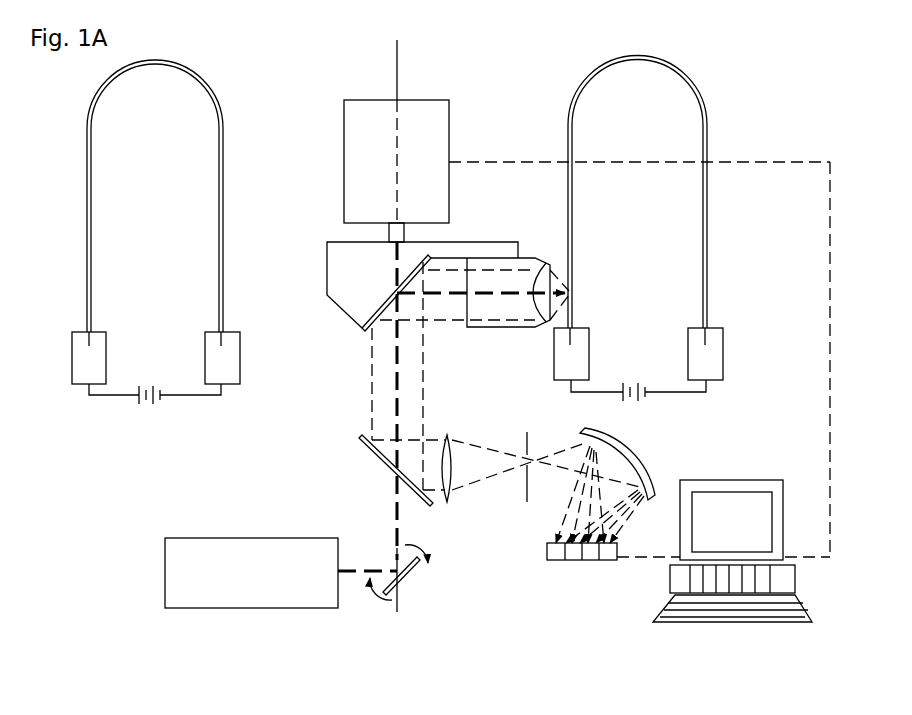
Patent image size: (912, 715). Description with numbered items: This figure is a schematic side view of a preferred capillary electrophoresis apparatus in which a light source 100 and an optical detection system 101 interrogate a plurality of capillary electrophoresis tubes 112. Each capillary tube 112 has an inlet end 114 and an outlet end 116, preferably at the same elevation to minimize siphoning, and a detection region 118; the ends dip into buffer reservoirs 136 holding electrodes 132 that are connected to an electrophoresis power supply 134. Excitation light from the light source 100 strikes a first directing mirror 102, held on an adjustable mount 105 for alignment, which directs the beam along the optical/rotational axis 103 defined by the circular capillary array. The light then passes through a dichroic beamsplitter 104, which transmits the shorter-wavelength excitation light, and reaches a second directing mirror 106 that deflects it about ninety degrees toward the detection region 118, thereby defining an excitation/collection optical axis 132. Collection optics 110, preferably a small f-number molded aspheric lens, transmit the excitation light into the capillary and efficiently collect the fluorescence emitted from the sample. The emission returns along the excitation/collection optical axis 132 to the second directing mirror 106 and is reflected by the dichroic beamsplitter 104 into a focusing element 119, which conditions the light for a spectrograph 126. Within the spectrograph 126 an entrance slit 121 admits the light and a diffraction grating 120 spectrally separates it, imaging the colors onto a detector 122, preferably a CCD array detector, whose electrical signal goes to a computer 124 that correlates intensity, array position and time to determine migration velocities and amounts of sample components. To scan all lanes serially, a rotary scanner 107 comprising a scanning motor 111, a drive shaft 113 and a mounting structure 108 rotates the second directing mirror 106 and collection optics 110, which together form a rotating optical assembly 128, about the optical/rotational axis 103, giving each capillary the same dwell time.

The light source 100 is at (260, 608).
The optical detection system 101 is at (464, 72).
The first directing mirror 102 is at (413, 567).
The optical/rotational axis 103 is at (397, 63).
The dichroic beamsplitter 104 is at (380, 458).
The adjustable mount 105 is at (402, 578).
The second directing mirror 106 is at (340, 298).
The rotary scanner 107 is at (480, 155).
The mounting structure 108 is at (326, 277).
The collection optics 110 is at (533, 258).
The scanning motor 111 is at (344, 128).
The capillary electrophoresis tubes 112 is at (692, 80).
The drive shaft 113 is at (404, 232).
The inlet end 114 is at (90, 345).
The outlet end 116 is at (222, 345).
The detection region 118 is at (219, 297).
The focusing element 119 is at (449, 440).
The diffraction grating 120 is at (628, 452).
The entrance slit 121 is at (522, 492).
The detector 122 is at (560, 560).
The computer 124 is at (737, 622).
The spectrograph 126 is at (660, 468).
The rotating optical assembly 128 is at (318, 237).
The excitation/collection optical axis 132 is at (575, 292).
The electrophoresis power supply 134 is at (148, 410).
The buffer reservoirs 136 is at (72, 353).